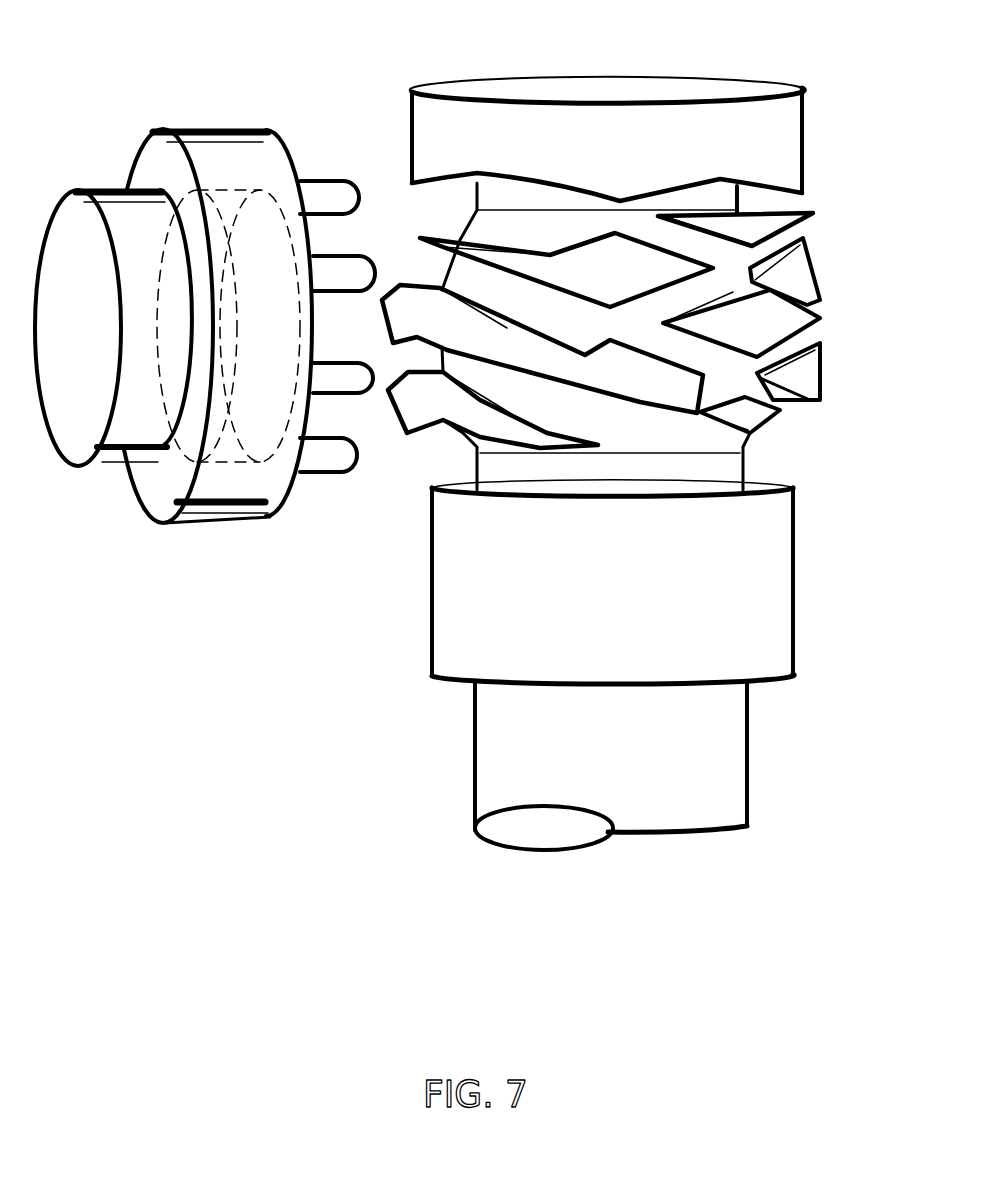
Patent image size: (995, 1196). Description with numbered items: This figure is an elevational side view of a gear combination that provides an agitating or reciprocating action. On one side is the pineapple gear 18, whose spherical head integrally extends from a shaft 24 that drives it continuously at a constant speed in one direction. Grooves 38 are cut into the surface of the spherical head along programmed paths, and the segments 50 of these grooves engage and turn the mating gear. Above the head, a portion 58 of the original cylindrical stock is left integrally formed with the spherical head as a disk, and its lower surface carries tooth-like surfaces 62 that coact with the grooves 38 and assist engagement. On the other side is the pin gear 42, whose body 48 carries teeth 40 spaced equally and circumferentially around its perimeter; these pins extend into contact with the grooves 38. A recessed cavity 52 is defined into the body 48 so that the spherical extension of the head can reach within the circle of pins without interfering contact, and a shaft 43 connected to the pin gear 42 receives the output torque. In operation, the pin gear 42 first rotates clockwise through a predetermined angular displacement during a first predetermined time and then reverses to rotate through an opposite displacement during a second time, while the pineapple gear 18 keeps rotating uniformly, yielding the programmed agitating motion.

The pineapple gear 18 is at (611, 344).
The shaft 24 is at (473, 720).
The groove 38 is at (440, 428).
The teeth 40 is at (328, 473).
The pin gear 42 is at (205, 351).
The shaft 43 is at (97, 188).
The body 48 is at (193, 523).
The segments 50 is at (803, 403).
The cavity 52 is at (228, 190).
The portion 58 is at (723, 78).
The tooth-like surfaces 62 is at (783, 83).